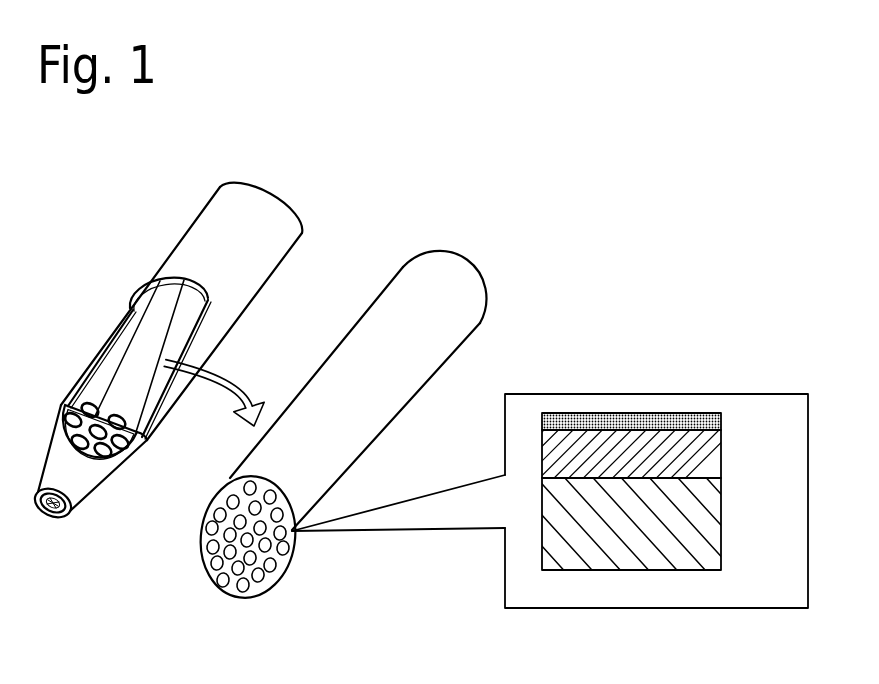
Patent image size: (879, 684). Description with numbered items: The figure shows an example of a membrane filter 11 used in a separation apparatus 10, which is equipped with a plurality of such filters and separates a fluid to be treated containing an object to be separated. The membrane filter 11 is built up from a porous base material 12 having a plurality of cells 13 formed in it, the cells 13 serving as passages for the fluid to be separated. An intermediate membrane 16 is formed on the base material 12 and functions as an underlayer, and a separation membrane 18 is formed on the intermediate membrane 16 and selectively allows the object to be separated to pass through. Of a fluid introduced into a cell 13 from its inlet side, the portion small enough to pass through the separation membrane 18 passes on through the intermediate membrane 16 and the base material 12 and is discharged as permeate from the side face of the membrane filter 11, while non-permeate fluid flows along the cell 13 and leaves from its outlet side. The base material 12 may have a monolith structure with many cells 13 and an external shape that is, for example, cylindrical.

The separation apparatus 10 is at (318, 174).
The membrane filter 11 is at (488, 336).
The base material 12 is at (735, 478).
The cells 13 is at (261, 578).
The intermediate membrane 16 is at (735, 430).
The separation membrane 18 is at (735, 413).